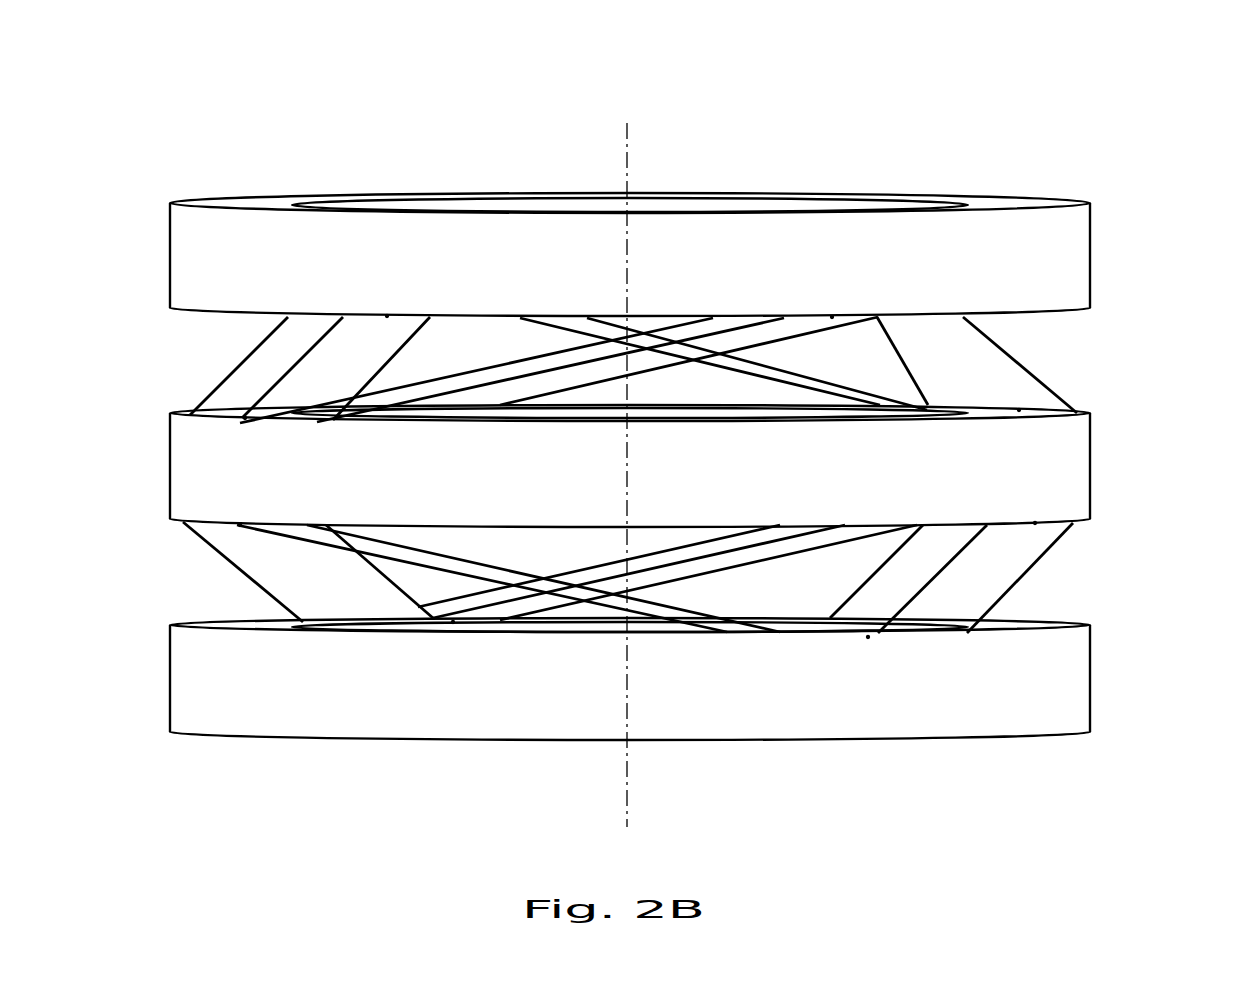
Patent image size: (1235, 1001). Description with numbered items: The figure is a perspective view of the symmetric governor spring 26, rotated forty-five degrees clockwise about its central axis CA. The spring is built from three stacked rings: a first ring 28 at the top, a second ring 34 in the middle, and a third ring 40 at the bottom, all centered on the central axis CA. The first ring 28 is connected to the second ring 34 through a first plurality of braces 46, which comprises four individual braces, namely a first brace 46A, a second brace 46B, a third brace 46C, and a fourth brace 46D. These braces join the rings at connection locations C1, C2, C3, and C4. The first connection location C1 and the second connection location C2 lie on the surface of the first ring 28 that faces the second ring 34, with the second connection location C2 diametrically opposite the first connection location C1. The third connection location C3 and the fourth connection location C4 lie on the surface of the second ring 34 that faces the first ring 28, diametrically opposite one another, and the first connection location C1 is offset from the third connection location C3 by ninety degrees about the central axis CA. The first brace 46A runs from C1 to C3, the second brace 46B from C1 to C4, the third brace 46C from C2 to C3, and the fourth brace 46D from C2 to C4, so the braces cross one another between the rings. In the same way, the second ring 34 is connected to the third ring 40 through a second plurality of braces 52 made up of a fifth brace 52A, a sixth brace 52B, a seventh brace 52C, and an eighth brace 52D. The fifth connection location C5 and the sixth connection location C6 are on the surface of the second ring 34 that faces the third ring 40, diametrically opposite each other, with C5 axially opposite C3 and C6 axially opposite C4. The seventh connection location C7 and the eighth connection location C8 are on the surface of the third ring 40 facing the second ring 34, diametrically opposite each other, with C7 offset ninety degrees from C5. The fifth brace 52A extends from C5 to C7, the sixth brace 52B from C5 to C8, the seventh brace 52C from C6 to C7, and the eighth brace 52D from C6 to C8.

The symmetric governor spring 26 is at (650, 419).
The first ring 28 is at (1080, 246).
The second ring 34 is at (1084, 458).
The third ring 40 is at (1078, 680).
The first plurality of braces 46 is at (1017, 361).
The first brace 46A is at (917, 352).
The second brace 46B is at (403, 397).
The third brace 46C is at (588, 323).
The fourth brace 46D is at (283, 342).
The second plurality of braces 52 is at (1035, 563).
The fifth brace 52A is at (945, 597).
The sixth brace 52B is at (725, 562).
The seventh brace 52C is at (452, 547).
The eighth brace 52D is at (310, 582).
The central axis CA is at (620, 456).
The first connection location C1 is at (832, 317).
The second connection location C2 is at (387, 316).
The third connection location C3 is at (1019, 410).
The fourth connection location C4 is at (245, 418).
The fifth connection location C5 is at (1035, 523).
The sixth connection location C6 is at (240, 525).
The seventh connection location C7 is at (868, 637).
The eighth connection location C8 is at (453, 622).